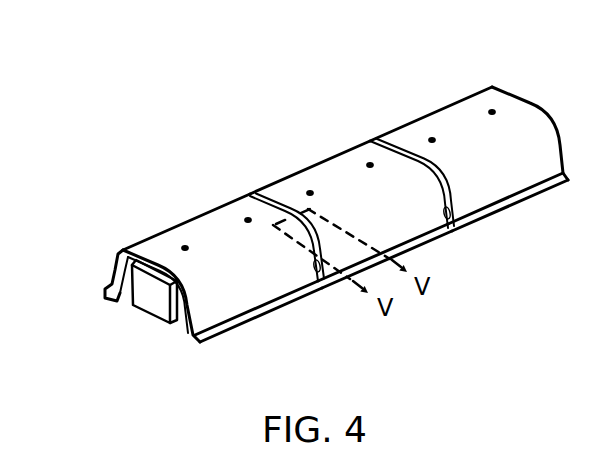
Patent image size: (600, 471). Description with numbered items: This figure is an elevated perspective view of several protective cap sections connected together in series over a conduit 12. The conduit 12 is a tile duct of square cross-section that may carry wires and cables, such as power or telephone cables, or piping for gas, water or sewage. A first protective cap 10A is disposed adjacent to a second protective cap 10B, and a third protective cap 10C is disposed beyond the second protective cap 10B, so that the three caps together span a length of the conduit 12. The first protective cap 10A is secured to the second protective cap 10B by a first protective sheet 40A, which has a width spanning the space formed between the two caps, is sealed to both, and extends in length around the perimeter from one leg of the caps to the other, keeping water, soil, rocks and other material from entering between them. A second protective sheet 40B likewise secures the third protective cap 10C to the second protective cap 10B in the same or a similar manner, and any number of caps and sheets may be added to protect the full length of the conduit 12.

The first protective cap 10A is at (153, 229).
The second protective cap 10B is at (288, 173).
The third protective cap 10C is at (395, 120).
The conduit 12 is at (150, 301).
The first protective sheet 40A is at (319, 283).
The second protective sheet 40B is at (449, 226).